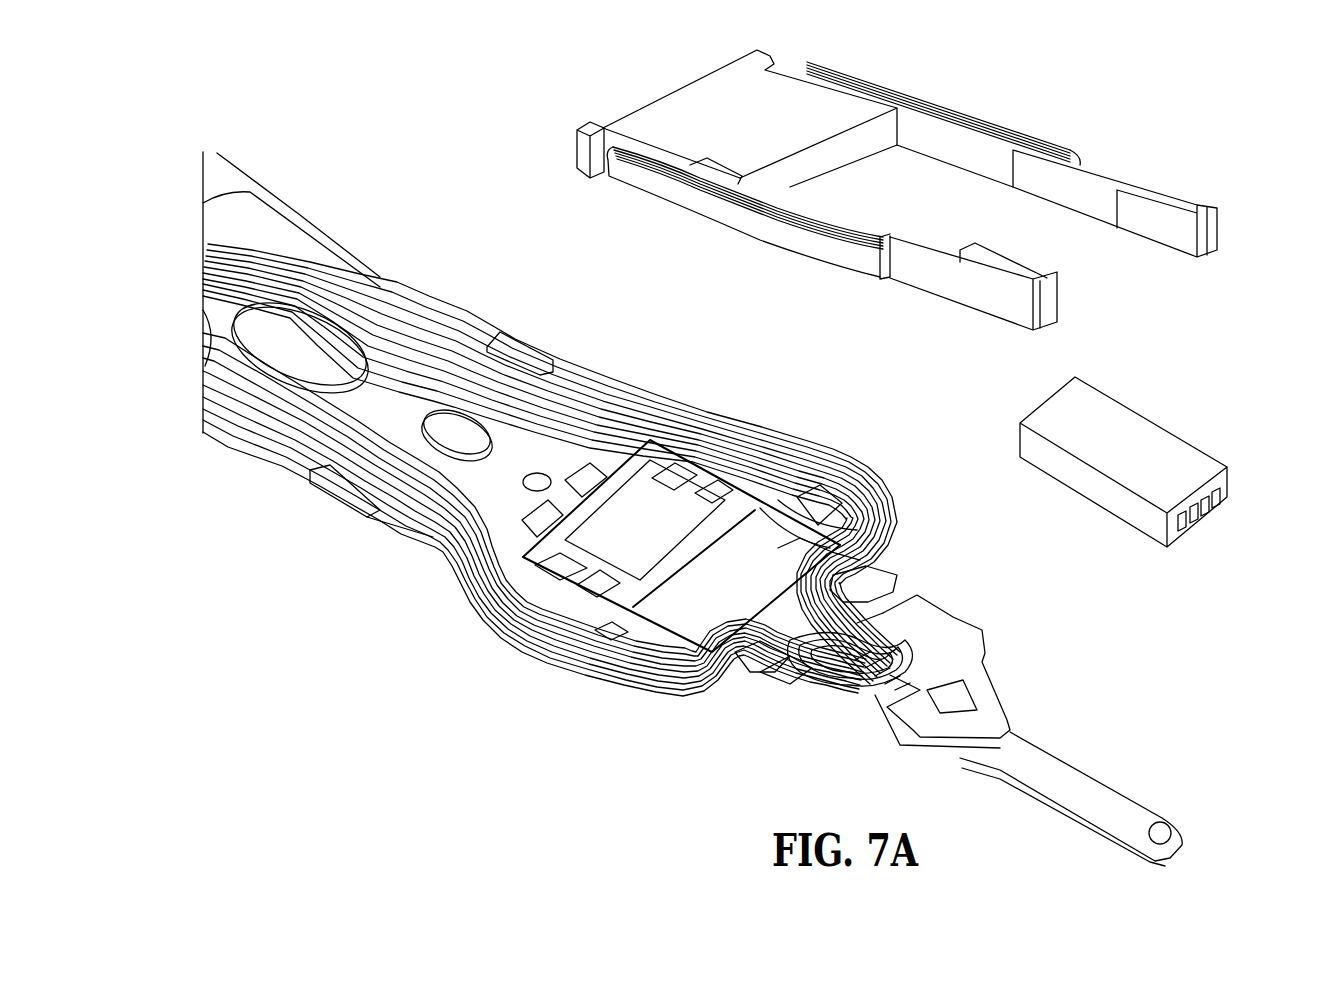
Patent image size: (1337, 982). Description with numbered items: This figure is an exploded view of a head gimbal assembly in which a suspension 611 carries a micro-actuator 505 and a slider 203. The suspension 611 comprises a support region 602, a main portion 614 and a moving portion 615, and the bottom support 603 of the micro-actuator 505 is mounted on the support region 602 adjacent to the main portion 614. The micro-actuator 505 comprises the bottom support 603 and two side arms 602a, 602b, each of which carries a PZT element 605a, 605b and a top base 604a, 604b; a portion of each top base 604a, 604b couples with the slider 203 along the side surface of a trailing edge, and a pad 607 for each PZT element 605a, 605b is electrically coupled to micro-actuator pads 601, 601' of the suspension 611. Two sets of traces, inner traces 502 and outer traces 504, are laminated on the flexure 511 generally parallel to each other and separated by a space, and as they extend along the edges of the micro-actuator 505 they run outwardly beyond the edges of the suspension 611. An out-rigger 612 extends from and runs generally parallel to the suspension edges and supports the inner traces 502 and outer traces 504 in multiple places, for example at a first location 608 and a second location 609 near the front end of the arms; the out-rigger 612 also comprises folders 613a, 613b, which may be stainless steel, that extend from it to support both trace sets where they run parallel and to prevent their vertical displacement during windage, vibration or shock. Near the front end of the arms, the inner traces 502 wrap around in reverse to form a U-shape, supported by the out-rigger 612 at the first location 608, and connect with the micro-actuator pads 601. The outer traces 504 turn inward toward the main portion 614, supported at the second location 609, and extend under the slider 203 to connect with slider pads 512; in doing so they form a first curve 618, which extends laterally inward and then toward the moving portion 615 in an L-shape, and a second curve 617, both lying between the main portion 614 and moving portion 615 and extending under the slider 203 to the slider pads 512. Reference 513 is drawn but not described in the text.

The slider 203 is at (1128, 437).
The flexure 511 is at (1218, 497).
The inner traces 502 is at (823, 493).
The outer traces 504 is at (893, 525).
The micro-actuator 505 is at (707, 120).
The slider pads 512 is at (930, 673).
The flexure tail arm 513 is at (1050, 770).
The micro-actuator pads 601 is at (549, 585).
The micro-actuator pads 601' is at (708, 428).
The support region 602 is at (622, 518).
The side arm 602a is at (1040, 303).
The side arm 602b is at (1215, 230).
The bottom support 603 is at (767, 98).
The top base 604a is at (1117, 172).
The top base 604b is at (923, 273).
The PZT element 605a is at (917, 120).
The PZT element 605b is at (698, 200).
The pad 607 is at (587, 145).
The first location 608 is at (833, 517).
The second location 609 is at (887, 518).
The suspension 611 is at (678, 555).
The out-rigger 612 is at (880, 575).
The folder 613a is at (797, 483).
The folder 613b is at (603, 640).
The main portion 614 is at (737, 593).
The moving portion 615 is at (953, 660).
The second curve 617 is at (840, 653).
The first curve 618 is at (857, 567).